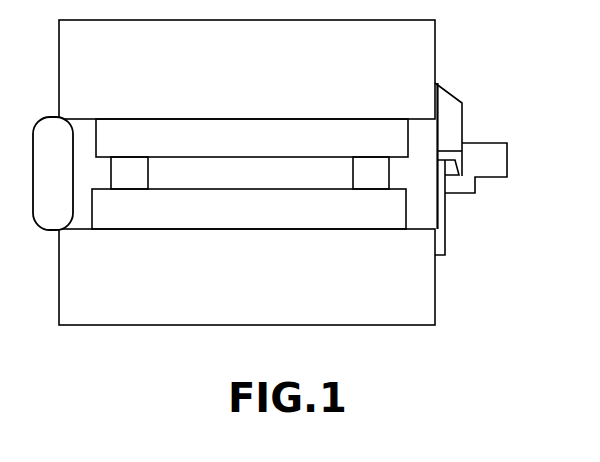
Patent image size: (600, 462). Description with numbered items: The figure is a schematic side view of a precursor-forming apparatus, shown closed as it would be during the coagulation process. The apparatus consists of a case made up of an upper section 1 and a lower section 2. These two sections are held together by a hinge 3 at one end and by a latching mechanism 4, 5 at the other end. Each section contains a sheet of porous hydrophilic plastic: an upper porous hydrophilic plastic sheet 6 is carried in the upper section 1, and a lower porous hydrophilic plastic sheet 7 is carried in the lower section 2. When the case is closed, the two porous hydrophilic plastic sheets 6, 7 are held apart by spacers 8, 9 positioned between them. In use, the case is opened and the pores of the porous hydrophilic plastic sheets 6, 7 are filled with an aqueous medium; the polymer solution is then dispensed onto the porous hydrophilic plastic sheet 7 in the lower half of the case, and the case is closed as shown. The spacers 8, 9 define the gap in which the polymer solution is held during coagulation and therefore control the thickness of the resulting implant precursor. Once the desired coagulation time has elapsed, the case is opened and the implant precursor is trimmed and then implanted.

The upper section 1 is at (241, 75).
The lower section 2 is at (240, 290).
The hinge 3 is at (44, 185).
The latching mechanism 4 is at (465, 119).
The latching mechanism 5 is at (445, 237).
The porous hydrophilic plastic sheet 6 is at (195, 147).
The porous hydrophilic plastic sheet 7 is at (195, 221).
The spacer 8 is at (119, 184).
The spacer 9 is at (361, 184).